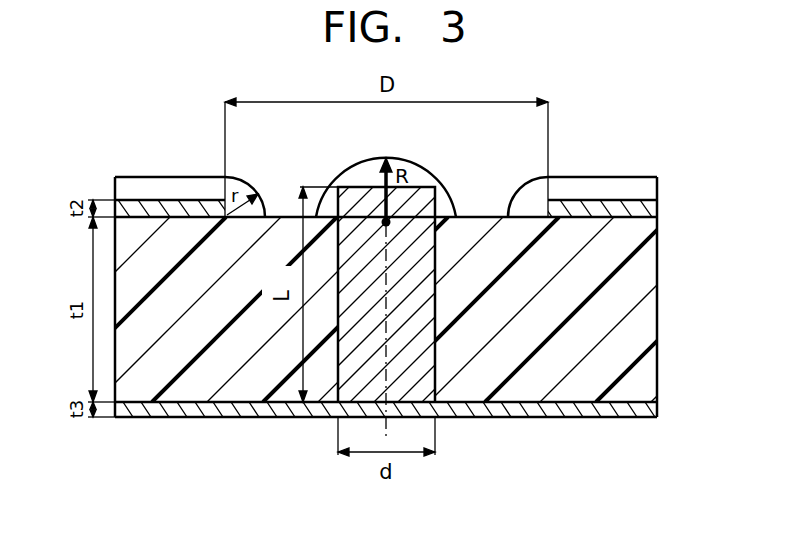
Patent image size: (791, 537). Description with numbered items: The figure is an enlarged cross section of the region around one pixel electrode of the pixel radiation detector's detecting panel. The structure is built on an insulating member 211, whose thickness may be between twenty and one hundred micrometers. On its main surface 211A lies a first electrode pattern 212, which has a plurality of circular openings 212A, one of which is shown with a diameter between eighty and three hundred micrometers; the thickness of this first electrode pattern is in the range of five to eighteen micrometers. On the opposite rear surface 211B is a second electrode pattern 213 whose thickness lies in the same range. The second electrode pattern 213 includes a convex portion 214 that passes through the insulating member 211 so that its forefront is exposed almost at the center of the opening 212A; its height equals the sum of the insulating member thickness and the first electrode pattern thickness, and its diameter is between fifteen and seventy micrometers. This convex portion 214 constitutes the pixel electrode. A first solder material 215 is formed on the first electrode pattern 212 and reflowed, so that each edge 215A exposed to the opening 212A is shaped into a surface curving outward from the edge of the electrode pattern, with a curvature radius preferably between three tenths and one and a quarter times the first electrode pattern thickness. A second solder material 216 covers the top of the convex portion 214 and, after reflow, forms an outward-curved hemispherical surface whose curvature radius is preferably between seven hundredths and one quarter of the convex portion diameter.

The insulating member 211 is at (647, 318).
The main surface 211A is at (655, 212).
The rear surface 211B is at (640, 407).
The first electrode pattern 212 is at (612, 205).
The opening 212A is at (480, 207).
The second electrode pattern 213 is at (577, 413).
The convex portion 214 is at (415, 220).
The first solder material 215 is at (153, 187).
The edge 215A is at (235, 190).
The second solder material 216 is at (388, 157).